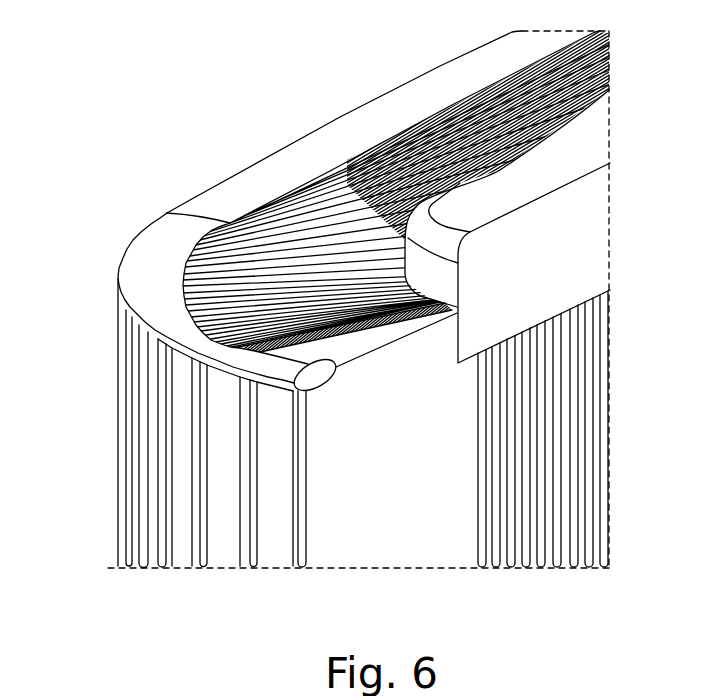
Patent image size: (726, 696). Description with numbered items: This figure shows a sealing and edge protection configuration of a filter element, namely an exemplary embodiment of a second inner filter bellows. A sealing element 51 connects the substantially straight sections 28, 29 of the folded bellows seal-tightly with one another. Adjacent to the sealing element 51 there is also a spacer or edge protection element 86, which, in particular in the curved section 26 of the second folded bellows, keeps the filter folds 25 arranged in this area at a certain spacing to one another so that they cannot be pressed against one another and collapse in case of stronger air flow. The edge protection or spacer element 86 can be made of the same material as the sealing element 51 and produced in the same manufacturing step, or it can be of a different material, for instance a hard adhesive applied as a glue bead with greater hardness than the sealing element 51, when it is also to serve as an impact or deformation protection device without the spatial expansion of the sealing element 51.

The filter folds 25 is at (165, 405).
The curved section 26 is at (162, 297).
The substantially straight section 28 is at (340, 163).
The substantially straight section 29 is at (411, 196).
The sealing element 51 is at (573, 167).
The spacer or edge protection element 86 is at (160, 248).